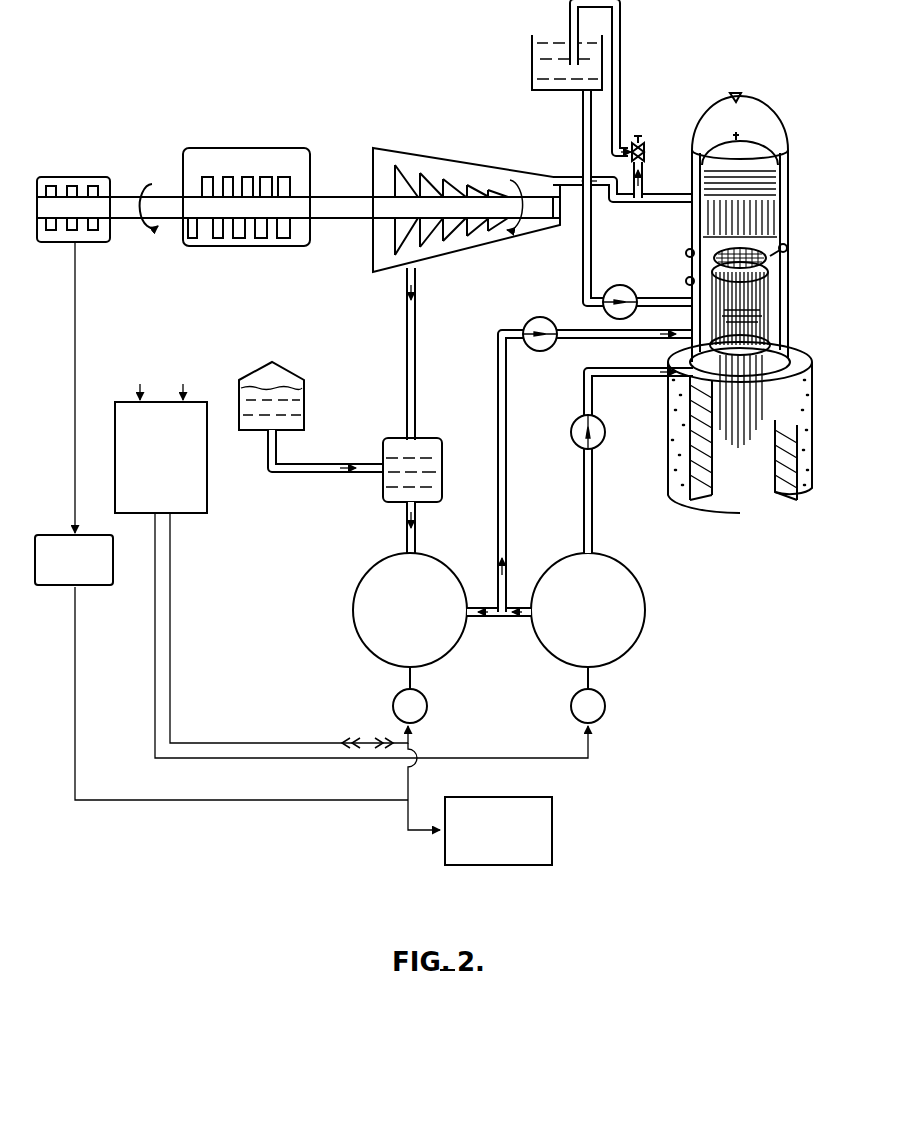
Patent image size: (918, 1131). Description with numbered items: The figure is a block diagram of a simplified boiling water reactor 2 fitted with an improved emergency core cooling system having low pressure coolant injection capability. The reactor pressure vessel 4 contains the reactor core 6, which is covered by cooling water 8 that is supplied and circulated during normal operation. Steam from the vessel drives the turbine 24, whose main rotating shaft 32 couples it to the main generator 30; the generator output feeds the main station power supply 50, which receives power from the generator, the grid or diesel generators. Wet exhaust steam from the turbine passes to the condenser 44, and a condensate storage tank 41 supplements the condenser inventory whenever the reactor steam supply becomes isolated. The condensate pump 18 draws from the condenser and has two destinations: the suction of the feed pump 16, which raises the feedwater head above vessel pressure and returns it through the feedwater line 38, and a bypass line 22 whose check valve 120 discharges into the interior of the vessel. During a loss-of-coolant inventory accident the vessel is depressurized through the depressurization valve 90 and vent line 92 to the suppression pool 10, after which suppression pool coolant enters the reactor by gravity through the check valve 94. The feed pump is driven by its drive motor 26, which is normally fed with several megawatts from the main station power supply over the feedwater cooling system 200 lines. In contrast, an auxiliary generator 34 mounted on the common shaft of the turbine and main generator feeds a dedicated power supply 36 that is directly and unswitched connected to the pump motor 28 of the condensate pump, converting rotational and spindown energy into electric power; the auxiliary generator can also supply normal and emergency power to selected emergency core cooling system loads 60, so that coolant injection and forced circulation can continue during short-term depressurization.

The boiling water reactor 2 is at (740, 288).
The reactor pressure vessel 4 is at (793, 254).
The reactor core 6 is at (759, 308).
The cooling water 8 is at (788, 245).
The suppression pool 10 is at (514, 53).
The feed pump 16 is at (589, 604).
The condensate pump 18 is at (411, 604).
The bypass line 22 is at (523, 473).
The turbine 24 is at (466, 210).
The drive motor 26 is at (601, 695).
The pump motor 28 is at (424, 695).
The main generator 30 is at (246, 181).
The main rotating shaft 32 is at (298, 191).
The auxiliary generator 34 is at (73, 193).
The power supply 36 is at (76, 429).
The feedwater line 38 is at (629, 462).
The condensate storage tank 41 is at (292, 370).
The condenser 44 is at (370, 456).
The main station power supply 50 is at (166, 426).
The emergency core cooling system loads 60 is at (518, 831).
The depressurization valve 90 is at (653, 167).
The vent line 92 is at (614, 77).
The check valve 94 is at (640, 205).
The check valve 120 is at (608, 320).
The feedwater cooling system 200 is at (331, 671).